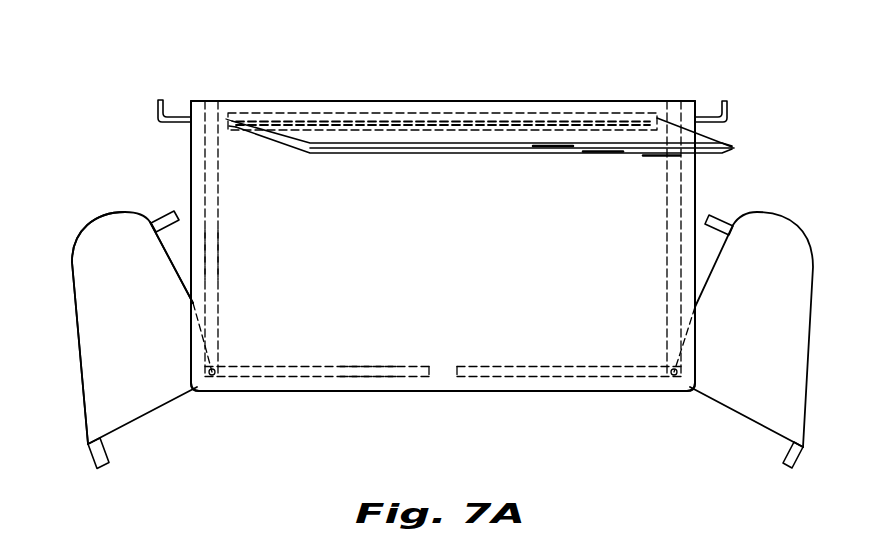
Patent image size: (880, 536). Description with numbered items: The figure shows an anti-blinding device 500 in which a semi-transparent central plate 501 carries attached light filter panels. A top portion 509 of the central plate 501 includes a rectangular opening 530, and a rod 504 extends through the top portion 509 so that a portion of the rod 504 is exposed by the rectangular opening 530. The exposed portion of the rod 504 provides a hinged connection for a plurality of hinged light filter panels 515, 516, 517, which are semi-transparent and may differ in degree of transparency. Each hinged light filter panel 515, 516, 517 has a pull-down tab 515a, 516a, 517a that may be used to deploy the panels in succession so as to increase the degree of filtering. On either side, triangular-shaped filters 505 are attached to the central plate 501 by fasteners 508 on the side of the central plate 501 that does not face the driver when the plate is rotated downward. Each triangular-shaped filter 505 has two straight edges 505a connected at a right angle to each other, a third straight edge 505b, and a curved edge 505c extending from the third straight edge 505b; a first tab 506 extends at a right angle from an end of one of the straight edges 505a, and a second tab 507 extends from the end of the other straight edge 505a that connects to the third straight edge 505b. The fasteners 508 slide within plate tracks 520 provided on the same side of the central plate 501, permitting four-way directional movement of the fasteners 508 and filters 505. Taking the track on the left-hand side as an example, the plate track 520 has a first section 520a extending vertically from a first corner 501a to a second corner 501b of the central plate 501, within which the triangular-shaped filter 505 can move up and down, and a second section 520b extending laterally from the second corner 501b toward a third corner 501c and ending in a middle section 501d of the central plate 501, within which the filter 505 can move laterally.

The anti-blinding device 500 is at (154, 83).
The semi-transparent central plate 501 is at (190, 187).
The first corner 501a is at (195, 101).
The second corner 501b is at (210, 378).
The third corner 501c is at (693, 370).
The middle section 501d is at (442, 378).
The rod 504 is at (172, 122).
The triangular-shaped filter 505 is at (100, 315).
The straight edges 505a is at (185, 392).
The third straight edge 505b is at (75, 362).
The curved edge 505c is at (78, 240).
The first tab 506 is at (180, 215).
The second tab 507 is at (98, 468).
The fastener 508 is at (220, 366).
The top portion 509 is at (706, 105).
The hinged light filter panel 515 is at (708, 133).
The pull-down tab 515a is at (662, 158).
The hinged light filter panel 516 is at (737, 147).
The pull-down tab 516a is at (600, 153).
The hinged light filter panel 517 is at (713, 155).
The pull-down tab 517a is at (550, 146).
The plate track 520 is at (465, 376).
The first section 520a is at (212, 252).
The second section 520b is at (367, 372).
The rectangular opening 530 is at (622, 112).